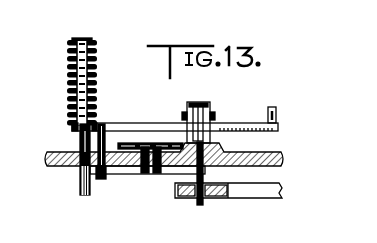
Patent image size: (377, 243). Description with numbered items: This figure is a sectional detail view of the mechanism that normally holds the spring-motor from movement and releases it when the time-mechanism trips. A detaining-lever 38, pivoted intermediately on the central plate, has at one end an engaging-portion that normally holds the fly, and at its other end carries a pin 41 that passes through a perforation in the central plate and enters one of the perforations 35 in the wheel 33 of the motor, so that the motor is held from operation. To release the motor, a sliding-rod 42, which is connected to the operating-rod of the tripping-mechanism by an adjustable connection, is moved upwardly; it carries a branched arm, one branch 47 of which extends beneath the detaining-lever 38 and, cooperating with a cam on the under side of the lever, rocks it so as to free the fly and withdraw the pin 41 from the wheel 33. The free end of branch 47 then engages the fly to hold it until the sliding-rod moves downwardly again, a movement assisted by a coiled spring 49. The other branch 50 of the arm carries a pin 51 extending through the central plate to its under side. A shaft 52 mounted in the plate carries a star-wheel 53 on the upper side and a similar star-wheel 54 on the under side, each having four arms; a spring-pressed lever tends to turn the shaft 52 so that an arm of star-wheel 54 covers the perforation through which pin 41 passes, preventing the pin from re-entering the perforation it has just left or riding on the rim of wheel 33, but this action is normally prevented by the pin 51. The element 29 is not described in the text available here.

The shaft 29 is at (57, 165).
The wheel 33 is at (248, 190).
The perforations 35 is at (195, 200).
The detaining-lever 38 is at (206, 128).
The pin 41 is at (206, 178).
The sliding-rod 42 is at (97, 108).
The branch 47 is at (234, 131).
The coiled spring 49 is at (97, 75).
The branch 50 is at (77, 130).
The pin 51 is at (101, 176).
The shaft 52 is at (140, 172).
The star-wheel 53 is at (124, 147).
The star-wheel 54 is at (133, 183).